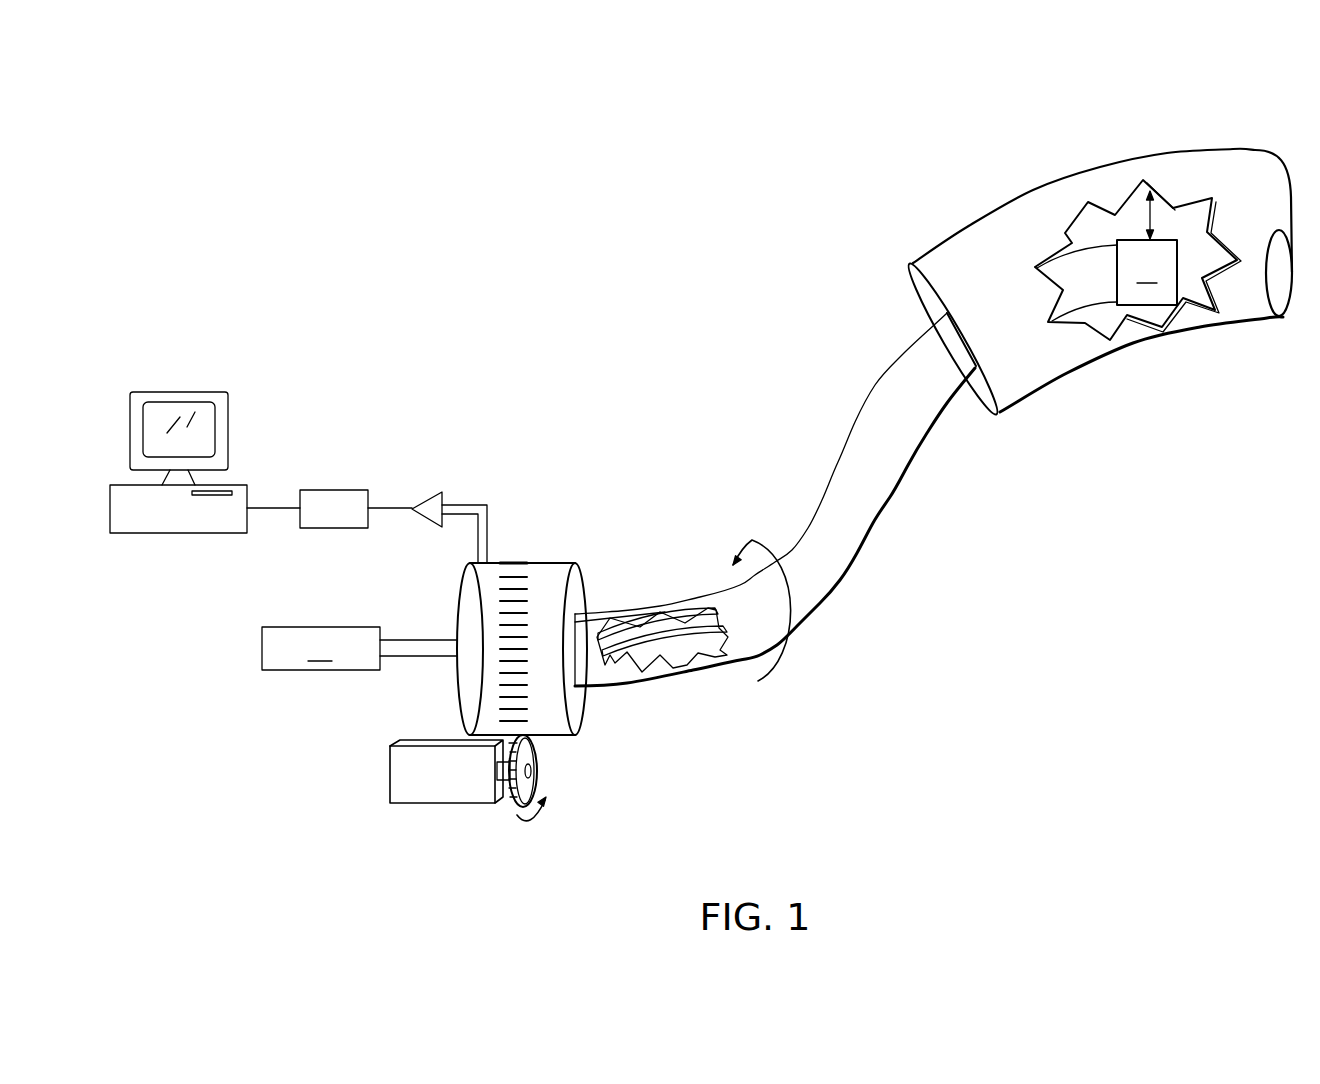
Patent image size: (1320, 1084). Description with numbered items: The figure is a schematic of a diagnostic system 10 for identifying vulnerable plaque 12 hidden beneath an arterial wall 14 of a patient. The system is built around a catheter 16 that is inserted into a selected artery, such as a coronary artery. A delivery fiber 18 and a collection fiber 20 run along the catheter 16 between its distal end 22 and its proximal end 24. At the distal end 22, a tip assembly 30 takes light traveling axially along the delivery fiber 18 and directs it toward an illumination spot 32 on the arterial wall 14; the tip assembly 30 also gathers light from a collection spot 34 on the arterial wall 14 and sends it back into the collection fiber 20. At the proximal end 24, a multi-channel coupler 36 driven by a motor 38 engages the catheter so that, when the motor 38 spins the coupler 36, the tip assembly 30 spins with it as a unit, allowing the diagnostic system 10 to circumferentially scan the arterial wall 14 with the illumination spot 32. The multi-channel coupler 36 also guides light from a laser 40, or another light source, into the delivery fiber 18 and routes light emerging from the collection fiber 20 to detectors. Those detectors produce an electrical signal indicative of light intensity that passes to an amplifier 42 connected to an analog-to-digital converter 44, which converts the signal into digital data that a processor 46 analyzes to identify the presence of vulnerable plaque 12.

The diagnostic system 10 is at (677, 171).
The vulnerable plaque 12 is at (1143, 178).
The arterial wall 14 is at (1247, 148).
The catheter 16 is at (875, 388).
The delivery fiber 18 is at (700, 663).
The collection fiber 20 is at (663, 620).
The distal end 22 is at (1104, 312).
The proximal end 24 is at (610, 697).
The tip assembly 30 is at (1147, 272).
The illumination spot 32 is at (1175, 180).
The collection spot 34 is at (1144, 235).
The multi-channel coupler 36 is at (537, 562).
The motor 38 is at (435, 808).
The laser 40 is at (359, 648).
The amplifier 42 is at (433, 490).
The analog-to-digital converter 44 is at (333, 490).
The processor 46 is at (233, 485).